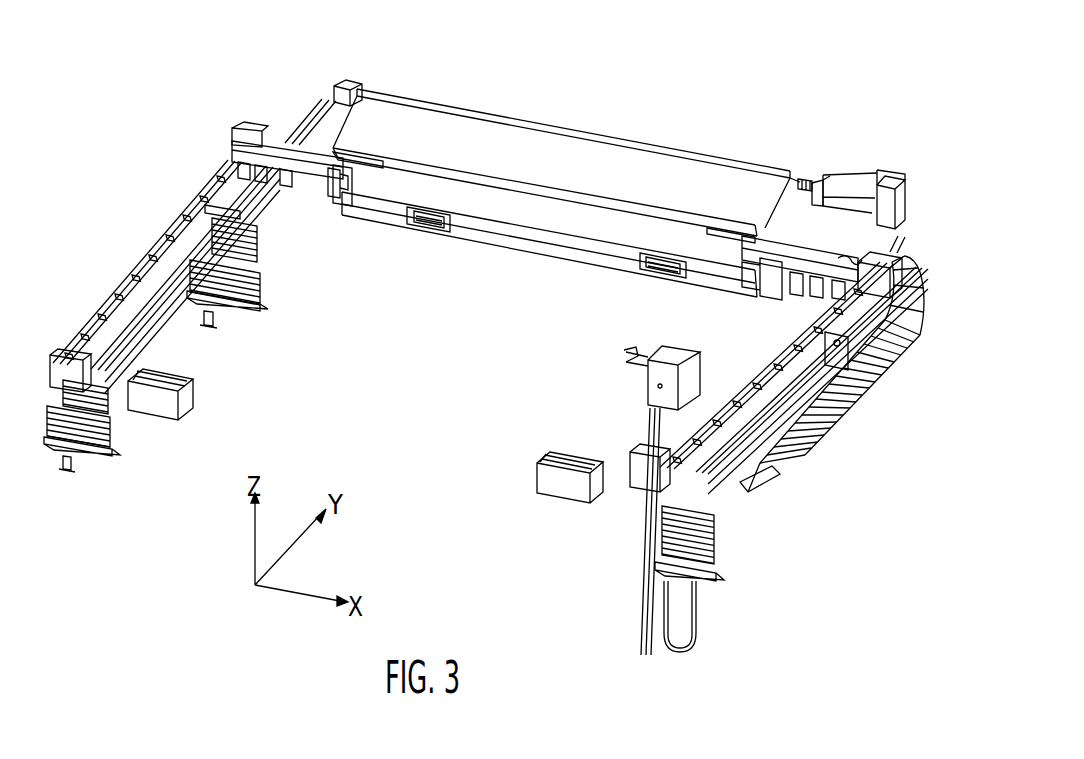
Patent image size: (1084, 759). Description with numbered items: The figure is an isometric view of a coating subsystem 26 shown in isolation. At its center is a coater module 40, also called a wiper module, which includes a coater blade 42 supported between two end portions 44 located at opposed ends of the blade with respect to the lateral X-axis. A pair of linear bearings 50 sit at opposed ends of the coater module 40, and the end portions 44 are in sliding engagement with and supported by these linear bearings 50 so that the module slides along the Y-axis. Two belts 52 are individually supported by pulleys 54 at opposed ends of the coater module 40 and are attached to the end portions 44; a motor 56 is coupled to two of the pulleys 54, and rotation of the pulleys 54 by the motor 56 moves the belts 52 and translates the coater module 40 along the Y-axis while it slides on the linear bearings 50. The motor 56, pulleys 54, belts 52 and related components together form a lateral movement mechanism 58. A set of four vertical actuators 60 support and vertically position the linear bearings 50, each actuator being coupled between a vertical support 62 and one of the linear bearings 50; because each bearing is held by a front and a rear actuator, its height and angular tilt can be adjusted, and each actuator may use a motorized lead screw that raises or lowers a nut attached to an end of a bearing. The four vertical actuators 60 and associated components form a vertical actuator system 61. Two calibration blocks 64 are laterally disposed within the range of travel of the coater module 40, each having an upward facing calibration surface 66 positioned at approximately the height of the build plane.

The coating subsystem 26 is at (233, 42).
The coater module 40 is at (422, 187).
The coater blade 42 is at (523, 240).
The end portions 44 is at (292, 142).
The linear bearings 50 is at (130, 283).
The belts 52 is at (365, 95).
The pulleys 54 is at (353, 95).
The motor 56 is at (843, 190).
The lateral movement mechanism 58 is at (178, 140).
The vertical actuators 60 is at (240, 235).
The vertical actuator system 61 is at (110, 158).
The vertical support 62 is at (240, 287).
The calibration blocks 64 is at (168, 402).
The calibration surface 66 is at (185, 375).